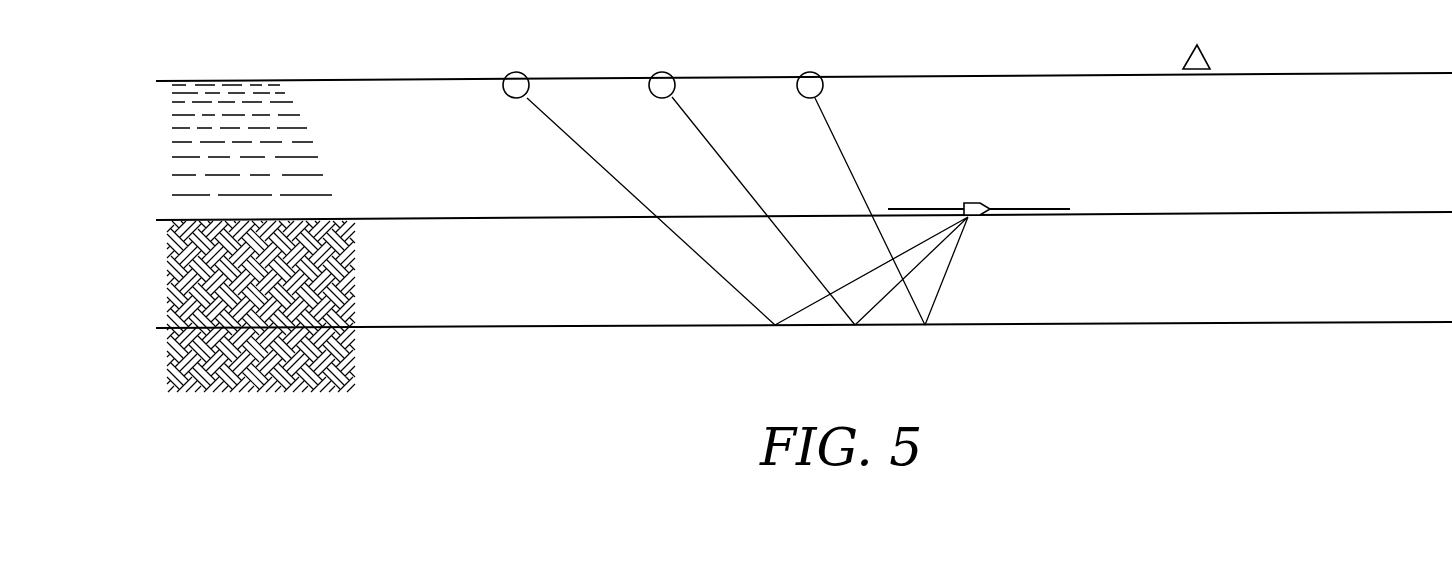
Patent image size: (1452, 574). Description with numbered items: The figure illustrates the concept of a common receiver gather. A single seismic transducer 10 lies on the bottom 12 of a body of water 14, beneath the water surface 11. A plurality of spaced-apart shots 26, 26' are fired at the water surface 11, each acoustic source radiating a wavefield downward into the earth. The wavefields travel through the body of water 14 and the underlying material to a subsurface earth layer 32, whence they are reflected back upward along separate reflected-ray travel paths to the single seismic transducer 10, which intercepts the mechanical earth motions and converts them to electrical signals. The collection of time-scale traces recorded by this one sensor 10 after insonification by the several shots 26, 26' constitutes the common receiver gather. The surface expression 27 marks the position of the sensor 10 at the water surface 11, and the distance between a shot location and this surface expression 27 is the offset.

The seismic transducer 10 is at (977, 202).
The water surface 11 is at (1388, 72).
The bottom 12 is at (1386, 212).
The body of water 14 is at (1228, 163).
The source 26 is at (819, 56).
The shot 26' is at (527, 56).
The surface expression 27 is at (1203, 50).
The subsurface earth layer 32 is at (1384, 322).